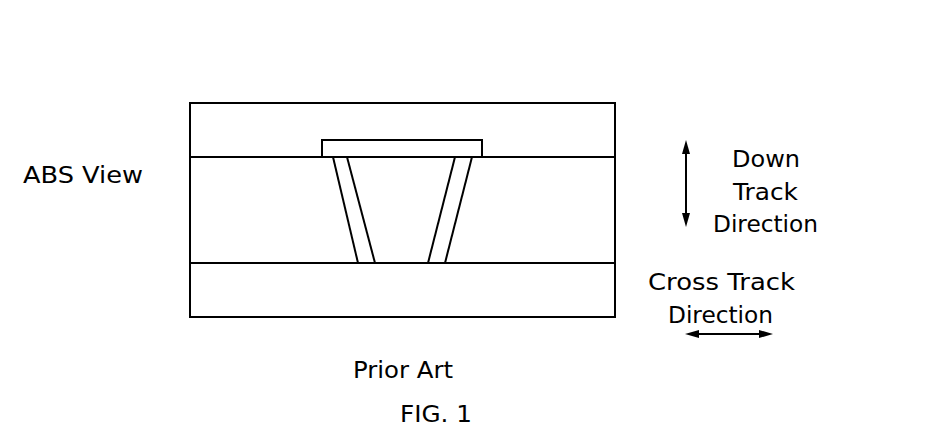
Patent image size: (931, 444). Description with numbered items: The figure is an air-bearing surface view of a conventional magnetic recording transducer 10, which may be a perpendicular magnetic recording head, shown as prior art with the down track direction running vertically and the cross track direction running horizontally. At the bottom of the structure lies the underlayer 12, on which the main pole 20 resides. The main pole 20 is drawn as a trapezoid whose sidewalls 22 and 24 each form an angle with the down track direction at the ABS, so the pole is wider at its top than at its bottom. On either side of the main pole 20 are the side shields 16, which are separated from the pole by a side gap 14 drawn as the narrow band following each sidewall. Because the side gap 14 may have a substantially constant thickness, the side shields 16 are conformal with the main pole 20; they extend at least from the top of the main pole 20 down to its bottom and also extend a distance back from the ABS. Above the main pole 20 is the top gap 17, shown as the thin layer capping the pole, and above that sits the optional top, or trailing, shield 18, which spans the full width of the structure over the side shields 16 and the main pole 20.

The magnetic recording transducer 10 is at (63, 99).
The underlayer 12 is at (402, 290).
The side gap 14 is at (335, 177).
The side shields 16 is at (402, 213).
The top gap 17 is at (353, 140).
The trailing shield 18 is at (615, 135).
The main pole 20 is at (401, 210).
The sidewall 22 is at (345, 240).
The sidewall 24 is at (452, 235).